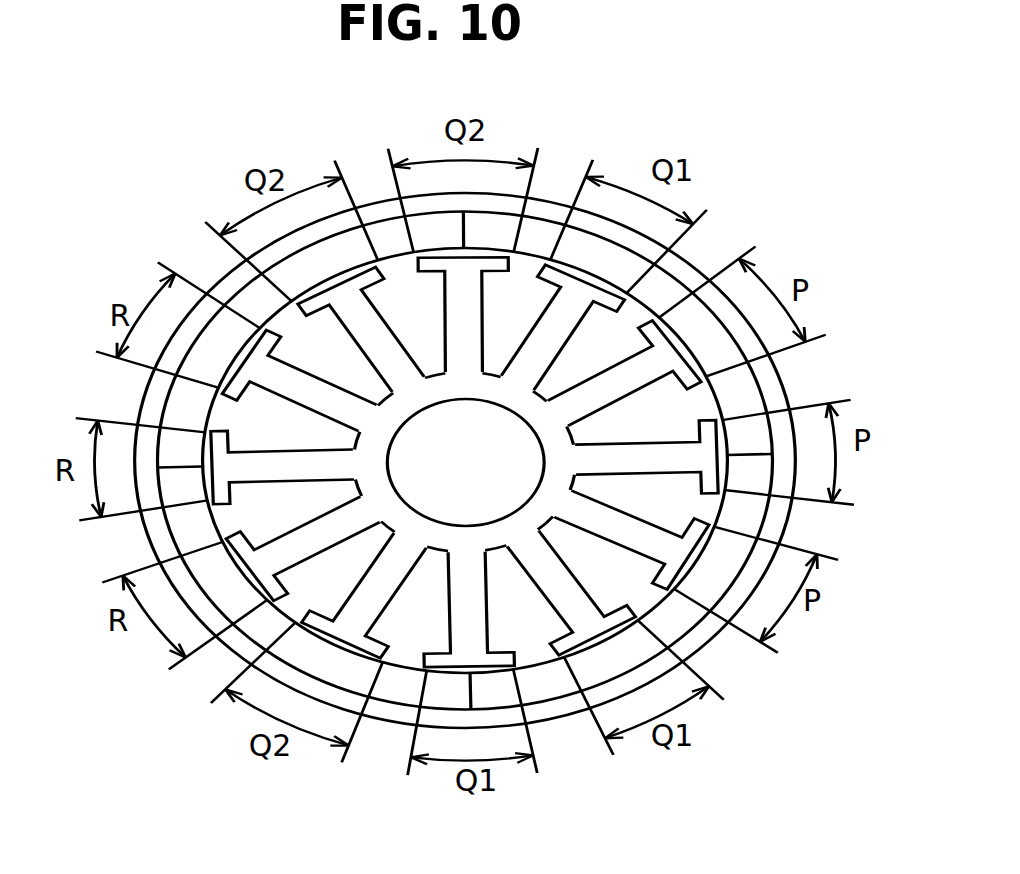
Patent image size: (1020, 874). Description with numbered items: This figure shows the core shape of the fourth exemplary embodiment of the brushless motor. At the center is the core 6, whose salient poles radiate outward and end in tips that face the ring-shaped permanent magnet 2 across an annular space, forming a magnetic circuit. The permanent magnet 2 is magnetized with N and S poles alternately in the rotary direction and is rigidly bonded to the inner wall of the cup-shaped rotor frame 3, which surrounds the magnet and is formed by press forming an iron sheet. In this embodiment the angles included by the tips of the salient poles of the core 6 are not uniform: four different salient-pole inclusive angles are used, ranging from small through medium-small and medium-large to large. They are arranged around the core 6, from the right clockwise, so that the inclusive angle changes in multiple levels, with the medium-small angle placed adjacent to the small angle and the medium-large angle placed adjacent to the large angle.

The permanent magnet 2 is at (663, 283).
The rotor frame 3 is at (742, 365).
The core 6 is at (643, 457).